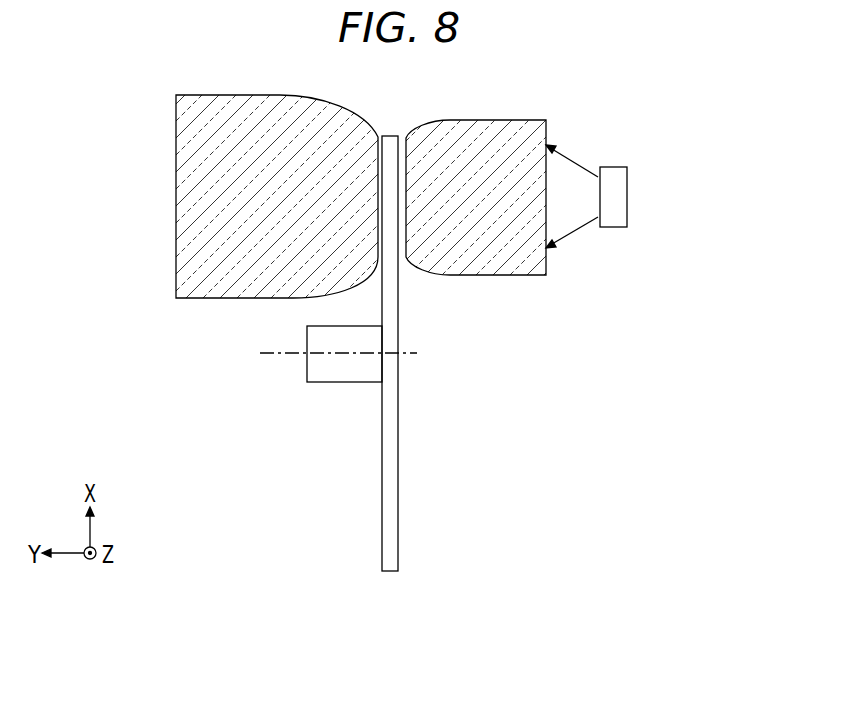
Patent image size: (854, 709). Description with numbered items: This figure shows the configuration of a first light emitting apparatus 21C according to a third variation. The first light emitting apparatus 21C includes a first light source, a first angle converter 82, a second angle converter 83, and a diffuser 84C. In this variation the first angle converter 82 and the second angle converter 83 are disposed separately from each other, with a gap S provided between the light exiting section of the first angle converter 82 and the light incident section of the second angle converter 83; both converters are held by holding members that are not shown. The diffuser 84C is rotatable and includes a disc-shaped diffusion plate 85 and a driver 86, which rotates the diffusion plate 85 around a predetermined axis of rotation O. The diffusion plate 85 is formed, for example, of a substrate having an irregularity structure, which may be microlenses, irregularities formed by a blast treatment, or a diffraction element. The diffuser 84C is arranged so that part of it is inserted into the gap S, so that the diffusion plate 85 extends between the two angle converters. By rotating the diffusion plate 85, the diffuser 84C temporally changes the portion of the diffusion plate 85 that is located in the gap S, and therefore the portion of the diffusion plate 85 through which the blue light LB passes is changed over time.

The first light emitting apparatus 21C is at (433, 314).
The diffuser 84C is at (364, 314).
The first angle converter 82 is at (534, 130).
The second angle converter 83 is at (197, 145).
The diffusion plate 85 is at (388, 517).
The driver 86 is at (330, 382).
The gap S is at (398, 130).
The axis of rotation O is at (410, 354).
The blue light LB is at (582, 224).